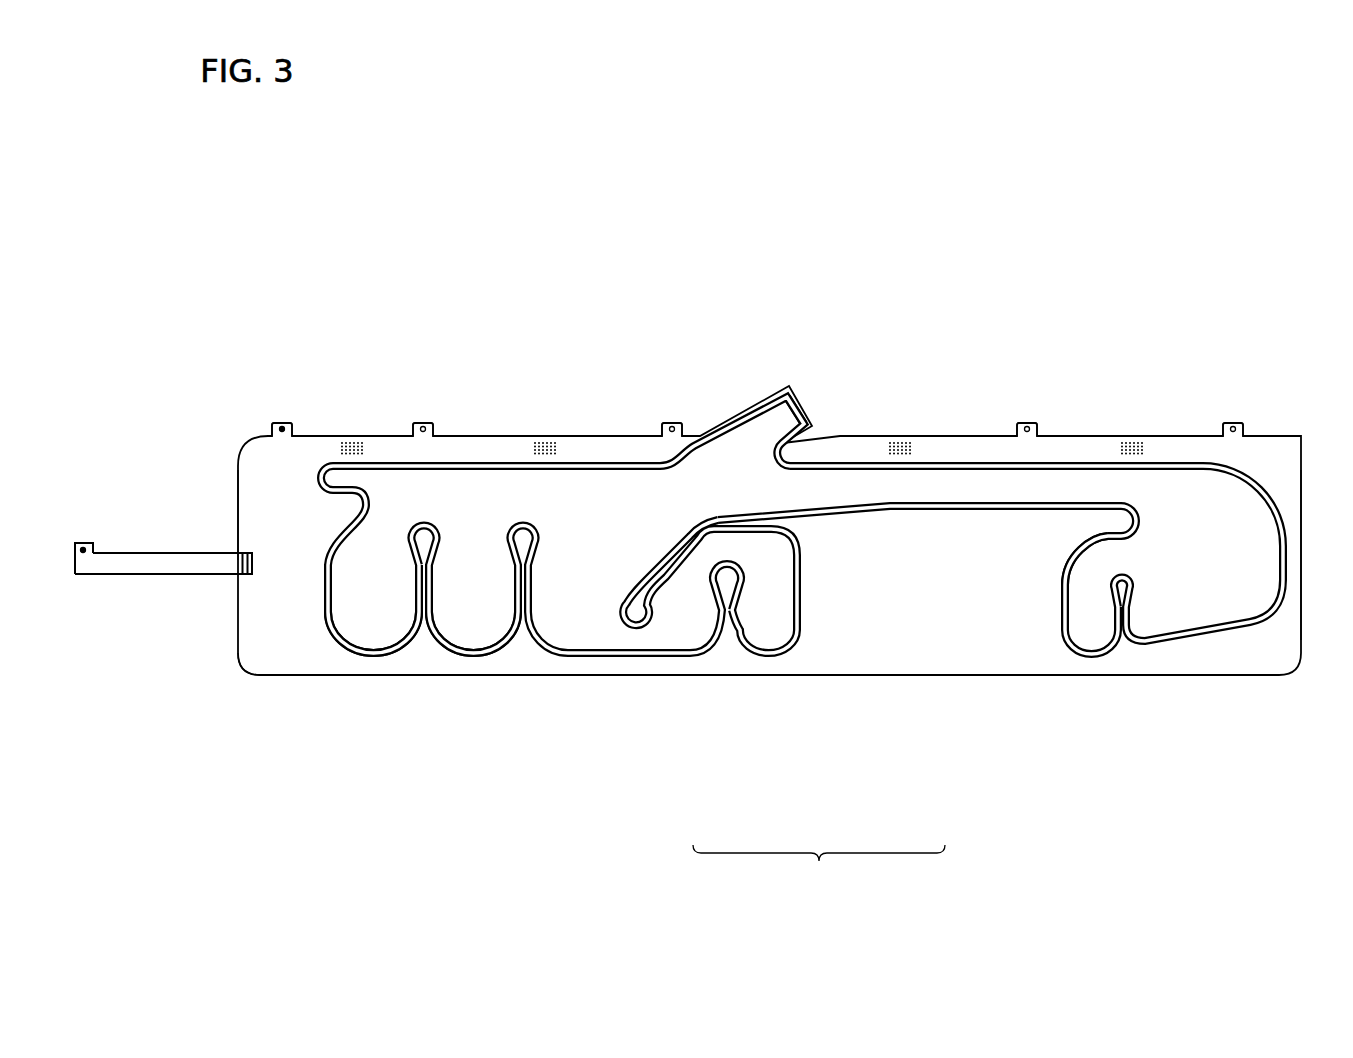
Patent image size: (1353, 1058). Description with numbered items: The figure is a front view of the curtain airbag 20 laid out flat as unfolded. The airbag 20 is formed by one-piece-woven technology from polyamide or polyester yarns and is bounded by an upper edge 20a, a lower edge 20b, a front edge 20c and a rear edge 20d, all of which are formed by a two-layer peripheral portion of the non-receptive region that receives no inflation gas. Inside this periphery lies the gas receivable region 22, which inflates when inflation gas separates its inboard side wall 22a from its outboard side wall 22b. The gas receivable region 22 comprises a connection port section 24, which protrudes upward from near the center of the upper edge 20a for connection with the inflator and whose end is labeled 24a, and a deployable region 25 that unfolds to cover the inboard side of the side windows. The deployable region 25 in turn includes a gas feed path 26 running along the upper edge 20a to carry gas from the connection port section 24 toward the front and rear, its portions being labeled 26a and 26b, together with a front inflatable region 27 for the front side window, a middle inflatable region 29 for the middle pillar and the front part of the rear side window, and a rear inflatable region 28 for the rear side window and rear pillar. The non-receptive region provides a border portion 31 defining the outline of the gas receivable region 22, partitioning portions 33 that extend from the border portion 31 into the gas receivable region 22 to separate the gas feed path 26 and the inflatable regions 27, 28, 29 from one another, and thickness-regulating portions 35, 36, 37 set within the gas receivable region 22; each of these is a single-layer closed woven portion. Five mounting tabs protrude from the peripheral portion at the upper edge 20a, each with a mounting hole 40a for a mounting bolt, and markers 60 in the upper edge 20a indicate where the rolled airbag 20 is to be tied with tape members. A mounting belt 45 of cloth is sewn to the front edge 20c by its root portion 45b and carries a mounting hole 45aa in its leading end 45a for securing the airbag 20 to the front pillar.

The airbag 20 is at (377, 275).
The upper edge 20a is at (602, 434).
The lower edge 20b is at (588, 677).
The front edge 20c is at (258, 500).
The rear edge 20d is at (1292, 592).
The gas receivable region 22 is at (375, 627).
The inboard side wall 22a is at (348, 625).
The outboard side wall 22b is at (362, 633).
The connection port section 24 is at (780, 417).
The inlet opening 24a is at (805, 397).
The deployable region 25 is at (819, 876).
The gas feed path 26 is at (953, 483).
The upstream flow path portion 26a is at (687, 500).
The downstream flow path portion 26b is at (1112, 492).
The front inflatable region 27 is at (592, 622).
The rear inflatable region 28 is at (1095, 608).
The middle inflatable region 29 is at (767, 622).
The border portion 31 is at (473, 654).
The partitioning portions 33 is at (655, 555).
The thickness-regulating portion 35 is at (508, 537).
The thickness-regulating portion 36 is at (1132, 590).
The thickness-regulating portion 37 is at (710, 593).
The mounting hole 40a is at (274, 425).
The mounting belt 45 is at (158, 568).
The leading end 45a is at (83, 547).
The mounting hole 45aa is at (83, 555).
The root portion 45b is at (245, 576).
The markers 60 is at (352, 430).